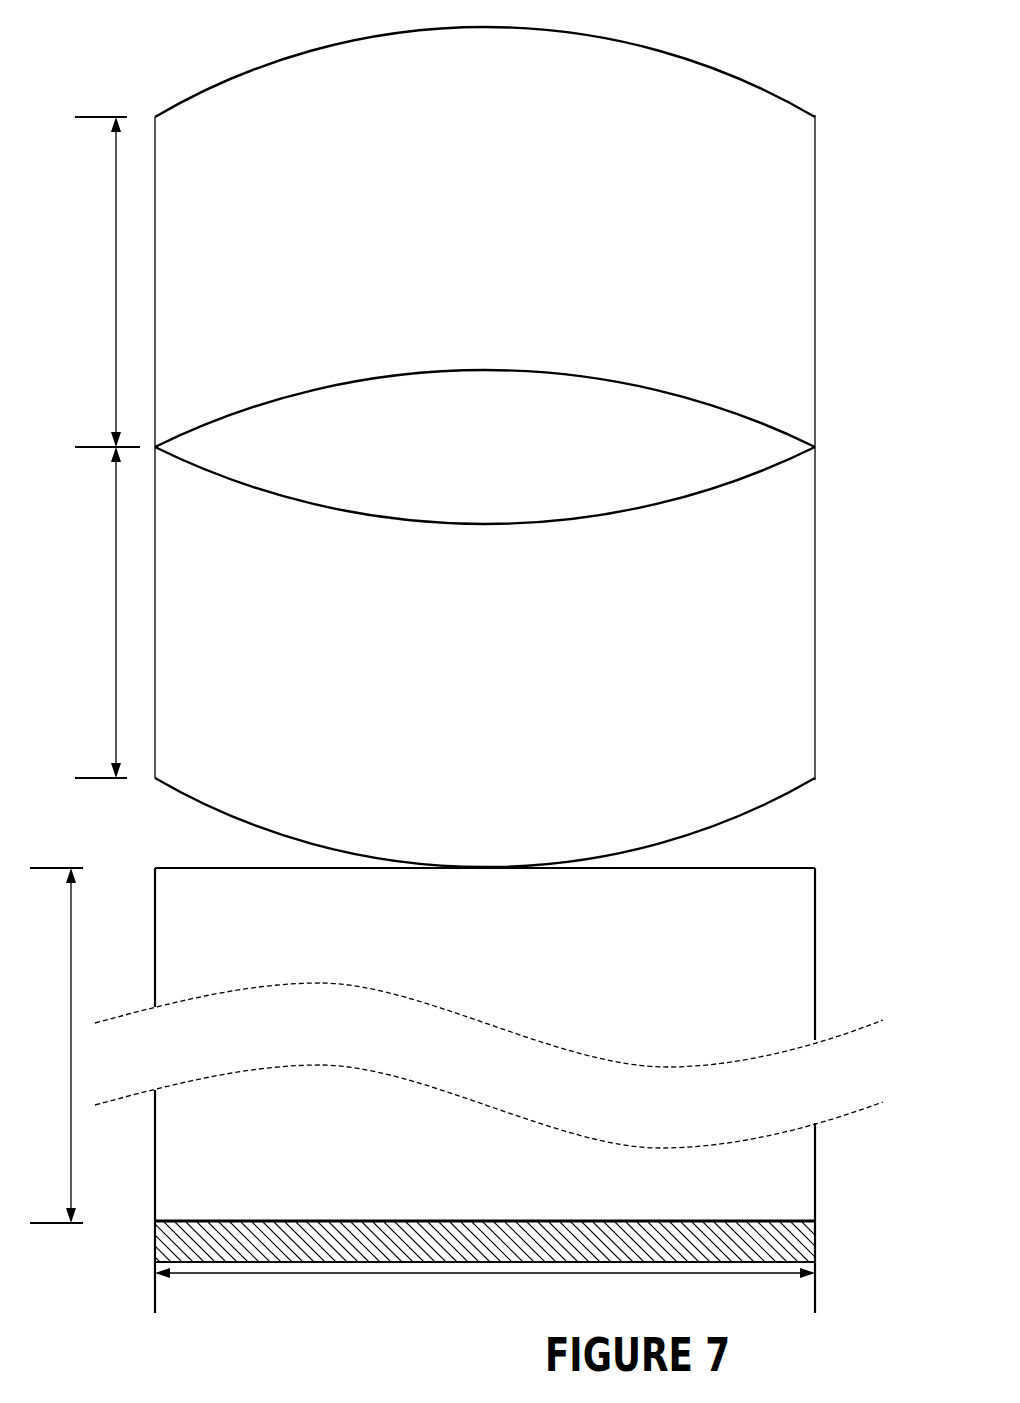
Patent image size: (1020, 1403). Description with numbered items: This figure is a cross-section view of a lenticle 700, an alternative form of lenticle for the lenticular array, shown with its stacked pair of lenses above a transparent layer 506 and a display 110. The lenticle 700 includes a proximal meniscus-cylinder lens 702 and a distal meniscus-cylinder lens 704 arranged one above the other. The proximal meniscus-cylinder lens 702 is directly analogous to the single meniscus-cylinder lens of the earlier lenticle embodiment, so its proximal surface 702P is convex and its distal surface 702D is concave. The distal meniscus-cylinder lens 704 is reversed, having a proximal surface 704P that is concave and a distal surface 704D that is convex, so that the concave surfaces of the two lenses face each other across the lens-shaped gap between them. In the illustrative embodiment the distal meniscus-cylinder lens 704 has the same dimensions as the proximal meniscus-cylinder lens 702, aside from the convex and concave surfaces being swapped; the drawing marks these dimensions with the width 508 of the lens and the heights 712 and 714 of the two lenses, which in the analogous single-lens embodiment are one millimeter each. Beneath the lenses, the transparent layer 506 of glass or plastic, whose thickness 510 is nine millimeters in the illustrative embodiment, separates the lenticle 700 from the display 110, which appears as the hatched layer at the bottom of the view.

The lenticle 700 is at (872, 120).
The proximal meniscus-cylinder lens 702 is at (485, 223).
The proximal surface 702P is at (485, 27).
The distal surface 702D is at (485, 372).
The distal meniscus-cylinder lens 704 is at (526, 656).
The proximal surface 704P is at (485, 520).
The distal surface 704D is at (485, 867).
The transparent layer 506 is at (719, 953).
The display 110 is at (815, 1240).
The width 508 is at (485, 1284).
The thickness 510 is at (56, 1045).
The height of first lens 712 is at (107, 282).
The height of second lens 714 is at (101, 612).